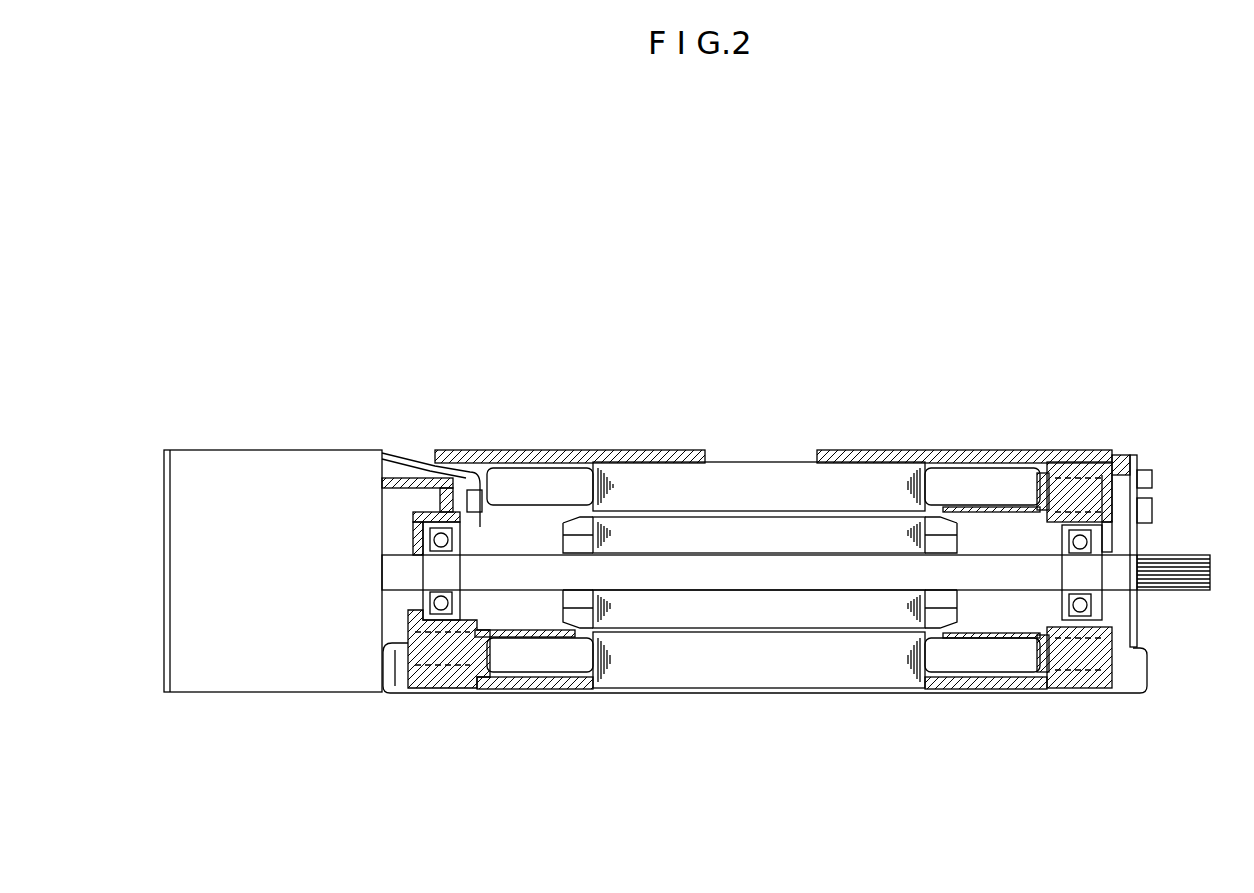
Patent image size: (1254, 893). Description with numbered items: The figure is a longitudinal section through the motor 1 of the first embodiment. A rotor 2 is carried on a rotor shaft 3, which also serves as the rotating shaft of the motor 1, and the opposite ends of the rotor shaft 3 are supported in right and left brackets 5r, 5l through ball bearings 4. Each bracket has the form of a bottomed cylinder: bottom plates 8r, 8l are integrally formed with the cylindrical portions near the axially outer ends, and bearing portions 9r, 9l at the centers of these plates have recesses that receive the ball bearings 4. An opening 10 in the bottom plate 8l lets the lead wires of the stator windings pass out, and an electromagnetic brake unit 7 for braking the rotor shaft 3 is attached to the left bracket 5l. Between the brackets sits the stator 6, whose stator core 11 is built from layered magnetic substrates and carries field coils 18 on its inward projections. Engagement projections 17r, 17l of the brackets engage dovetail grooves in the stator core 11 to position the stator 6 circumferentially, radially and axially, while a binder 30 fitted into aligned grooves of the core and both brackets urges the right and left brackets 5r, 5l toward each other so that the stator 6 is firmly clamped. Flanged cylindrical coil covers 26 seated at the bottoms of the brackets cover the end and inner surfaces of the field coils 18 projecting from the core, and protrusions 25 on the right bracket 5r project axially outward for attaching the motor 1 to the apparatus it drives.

The motor 1 is at (754, 347).
The rotor 2 is at (832, 612).
The rotor shaft 3 is at (1180, 558).
The ball bearing 4 is at (435, 603).
The left bracket 5l is at (557, 450).
The right bracket 5r is at (963, 450).
The stator 6 is at (762, 458).
The electromagnetic brake unit 7 is at (290, 694).
The bottom plate 8l is at (420, 473).
The bottom plate 8r is at (1075, 475).
The bearing portion 9l is at (408, 530).
The bearing portion 9r is at (1113, 527).
The opening 10 is at (437, 463).
The stator core 11 is at (741, 667).
The engagement projection 17l is at (652, 468).
The engagement projection 17r is at (882, 468).
The field coil 18 is at (980, 660).
The protrusions 25 is at (1153, 510).
The coil cover 26 is at (1017, 512).
The binder 30 is at (600, 697).